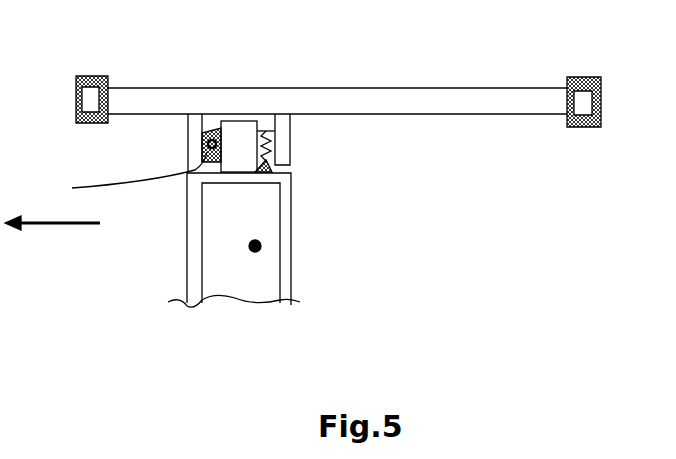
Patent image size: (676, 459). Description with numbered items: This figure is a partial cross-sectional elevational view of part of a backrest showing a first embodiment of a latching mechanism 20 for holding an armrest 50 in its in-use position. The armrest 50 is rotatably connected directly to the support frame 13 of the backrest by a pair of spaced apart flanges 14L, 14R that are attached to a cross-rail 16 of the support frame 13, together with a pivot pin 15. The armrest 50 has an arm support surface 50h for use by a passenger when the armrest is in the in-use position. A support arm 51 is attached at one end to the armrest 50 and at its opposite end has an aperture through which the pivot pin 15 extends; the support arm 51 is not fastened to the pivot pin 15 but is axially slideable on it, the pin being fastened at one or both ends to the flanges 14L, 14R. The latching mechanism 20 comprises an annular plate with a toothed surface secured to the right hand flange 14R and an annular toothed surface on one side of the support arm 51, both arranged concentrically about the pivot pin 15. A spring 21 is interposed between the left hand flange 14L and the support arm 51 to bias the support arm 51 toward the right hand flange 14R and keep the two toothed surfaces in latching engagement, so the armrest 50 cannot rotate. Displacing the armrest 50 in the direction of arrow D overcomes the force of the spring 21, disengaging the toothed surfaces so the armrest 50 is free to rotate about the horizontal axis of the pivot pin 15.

The support frame 13 is at (75, 77).
The cross-rail 16 is at (313, 88).
The left hand flange 14L is at (188, 143).
The right hand flange 14R is at (290, 133).
The support arm 51 is at (234, 121).
The spring 21 is at (212, 138).
The pivot pin 15 is at (121, 177).
The latching mechanism 20 is at (262, 170).
The armrest 50 is at (187, 228).
The arm support surface 50h is at (261, 247).
The arrow D is at (66, 222).